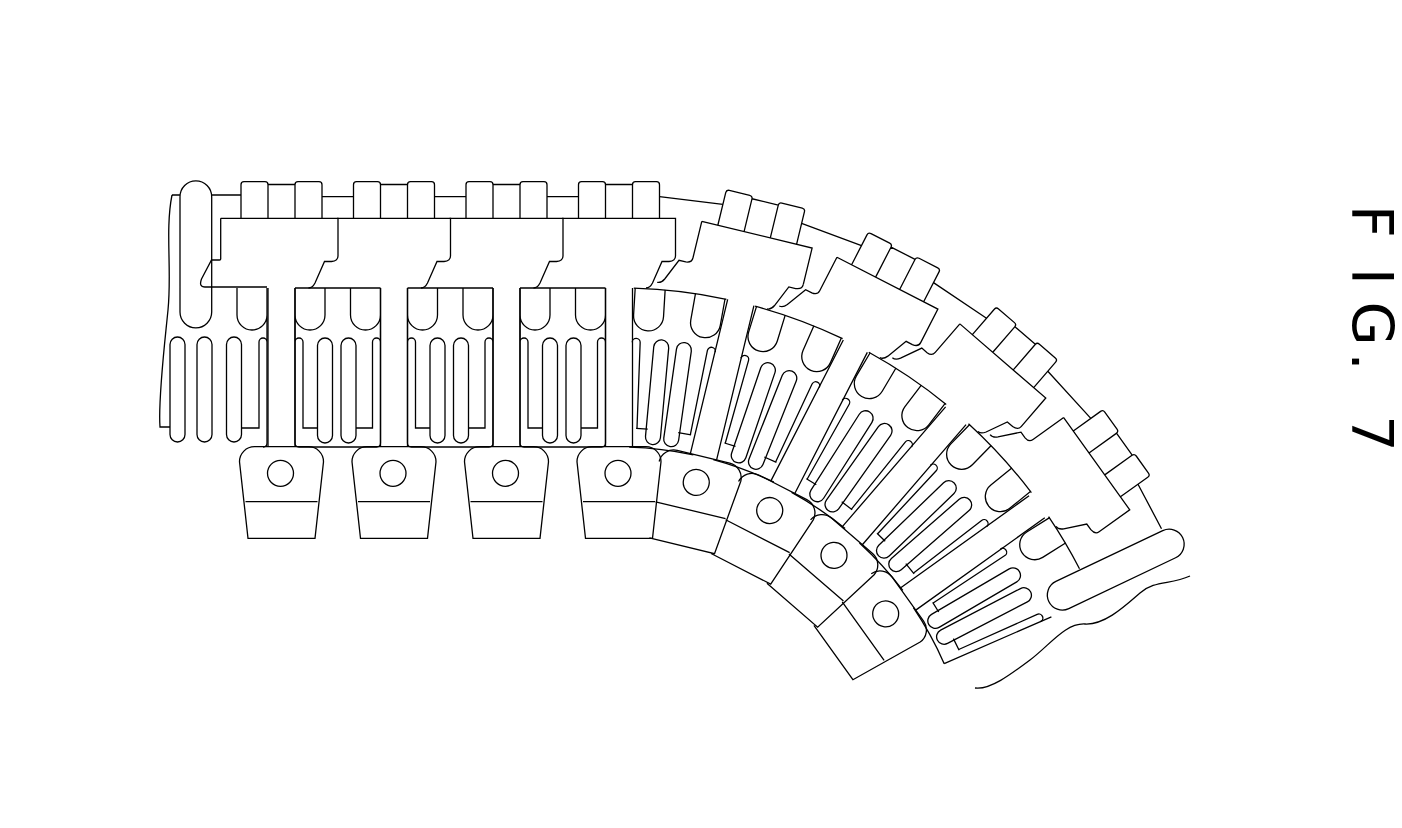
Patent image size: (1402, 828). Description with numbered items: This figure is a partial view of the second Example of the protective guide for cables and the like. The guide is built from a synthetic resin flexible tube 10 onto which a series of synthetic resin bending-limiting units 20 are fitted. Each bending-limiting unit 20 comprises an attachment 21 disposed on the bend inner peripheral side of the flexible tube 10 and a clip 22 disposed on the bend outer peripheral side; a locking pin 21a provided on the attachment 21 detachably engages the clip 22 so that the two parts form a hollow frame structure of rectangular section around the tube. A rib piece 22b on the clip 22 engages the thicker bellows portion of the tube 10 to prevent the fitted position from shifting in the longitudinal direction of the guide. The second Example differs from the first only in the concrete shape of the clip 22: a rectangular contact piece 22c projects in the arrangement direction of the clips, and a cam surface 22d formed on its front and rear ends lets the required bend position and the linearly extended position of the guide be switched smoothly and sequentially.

The synthetic resin flexible tube 10 is at (178, 331).
The synthetic resin bending-limiting unit 20 is at (252, 470).
The attachment 21 is at (693, 533).
The locking pin 21a is at (694, 487).
The clip 22 is at (925, 102).
The rib piece 22b is at (765, 214).
The head body portion of yoke 22c is at (787, 255).
The cam surface 22d is at (652, 285).